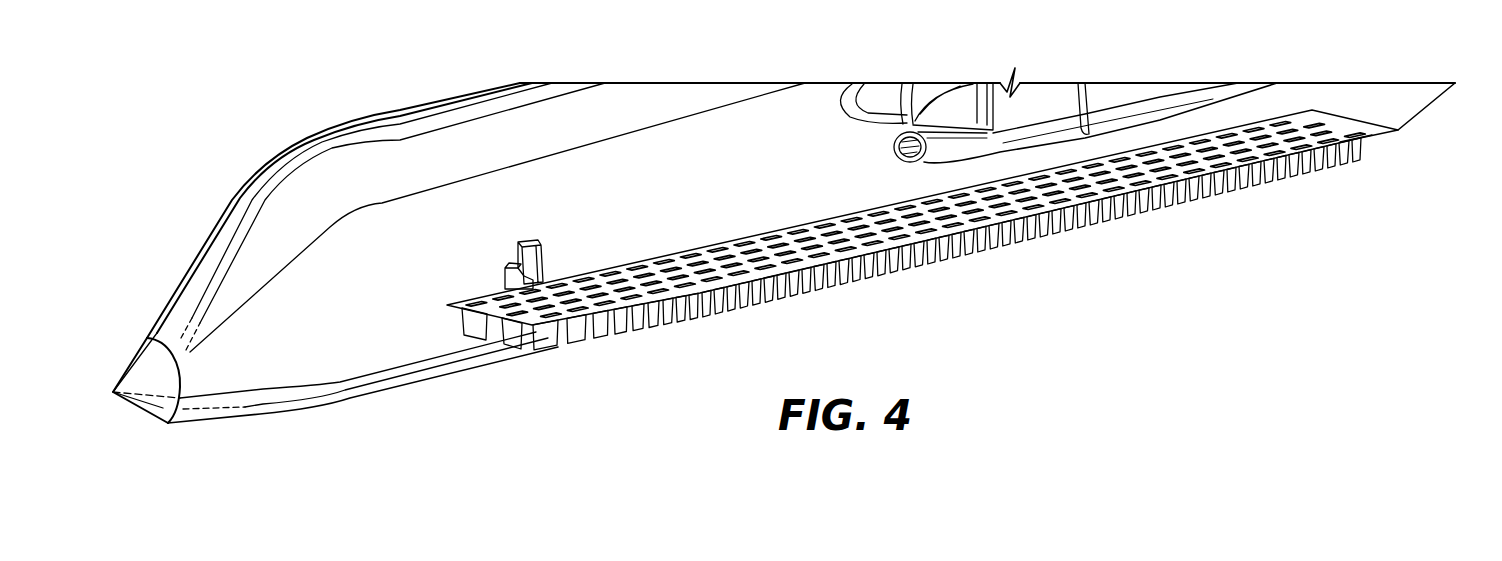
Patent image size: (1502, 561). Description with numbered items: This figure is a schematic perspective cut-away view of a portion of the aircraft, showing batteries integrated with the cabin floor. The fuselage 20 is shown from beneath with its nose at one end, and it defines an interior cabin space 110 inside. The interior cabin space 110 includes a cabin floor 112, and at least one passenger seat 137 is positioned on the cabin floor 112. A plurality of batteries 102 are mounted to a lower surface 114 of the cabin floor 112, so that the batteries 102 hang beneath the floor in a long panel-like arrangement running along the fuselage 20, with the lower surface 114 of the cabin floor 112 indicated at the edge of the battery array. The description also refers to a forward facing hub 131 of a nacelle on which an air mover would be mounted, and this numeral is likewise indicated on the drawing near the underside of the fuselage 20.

The fuselage 20 is at (272, 160).
The interior cabin space 110 is at (670, 203).
The forward facing hub 131 is at (490, 364).
The passenger seat 137 is at (528, 241).
The cabin floor 112 is at (1372, 138).
The batteries 102 is at (549, 349).
The lower surface 114 is at (1359, 139).